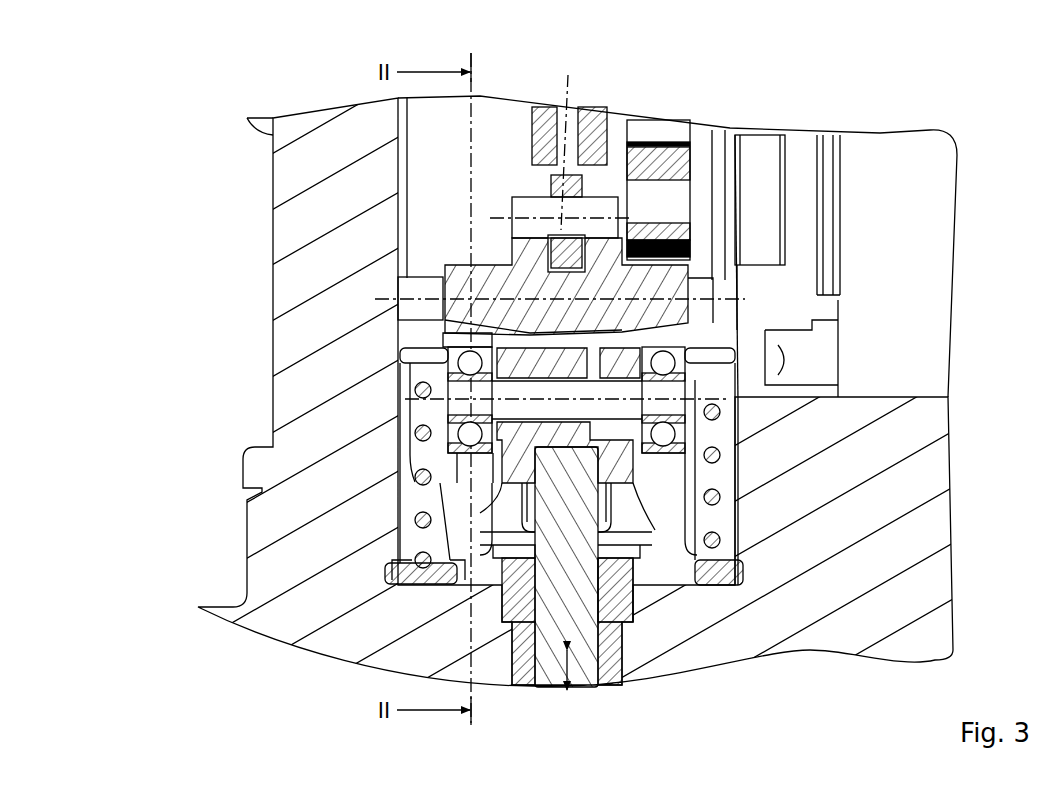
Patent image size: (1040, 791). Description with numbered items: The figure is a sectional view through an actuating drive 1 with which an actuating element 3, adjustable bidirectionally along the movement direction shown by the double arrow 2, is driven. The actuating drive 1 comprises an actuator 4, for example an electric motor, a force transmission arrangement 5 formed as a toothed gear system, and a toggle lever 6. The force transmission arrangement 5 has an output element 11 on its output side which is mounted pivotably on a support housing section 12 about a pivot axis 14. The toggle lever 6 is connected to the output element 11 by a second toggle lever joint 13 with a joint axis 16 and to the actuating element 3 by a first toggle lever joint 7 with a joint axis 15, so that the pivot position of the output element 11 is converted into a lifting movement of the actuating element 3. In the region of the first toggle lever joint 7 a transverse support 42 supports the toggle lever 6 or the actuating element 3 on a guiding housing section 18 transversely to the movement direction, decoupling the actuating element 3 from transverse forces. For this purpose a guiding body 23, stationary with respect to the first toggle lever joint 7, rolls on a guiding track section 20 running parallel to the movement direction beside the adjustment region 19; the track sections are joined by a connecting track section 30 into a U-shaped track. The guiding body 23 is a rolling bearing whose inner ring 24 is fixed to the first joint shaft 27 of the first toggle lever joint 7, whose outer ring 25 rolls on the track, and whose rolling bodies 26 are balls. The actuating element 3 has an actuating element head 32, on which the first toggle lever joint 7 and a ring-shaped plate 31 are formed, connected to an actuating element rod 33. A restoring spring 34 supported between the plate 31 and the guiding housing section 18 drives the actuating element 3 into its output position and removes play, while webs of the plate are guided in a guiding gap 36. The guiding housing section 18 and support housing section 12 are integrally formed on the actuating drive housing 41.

The actuating drive 1 is at (208, 105).
The double arrow 2 is at (567, 660).
The actuating element 3 is at (601, 598).
The actuator 4 is at (920, 228).
The force transmission arrangement 5 is at (658, 105).
The toggle lever 6 is at (590, 210).
The first toggle lever joint 7 is at (530, 206).
The output element 11 is at (462, 300).
The support housing section 12 is at (290, 226).
The second toggle lever joint 13 is at (520, 207).
The pivot axis 14 is at (380, 297).
The joint axis 15 is at (770, 380).
The joint axis 16 is at (565, 143).
The guiding housing section 18 is at (730, 520).
The adjustment region 19 is at (400, 472).
The guiding track section 20 is at (415, 445).
The guiding body 23 is at (440, 370).
The inner ring 24 is at (437, 372).
The outer ring 25 is at (440, 330).
The rolling bodies 26 is at (455, 336).
The first joint shaft 27 is at (622, 290).
The connecting track section 30 is at (662, 518).
The plate 31 is at (738, 330).
The actuating element head 32 is at (735, 300).
The actuating element rod 33 is at (440, 600).
The restoring spring 34 is at (405, 508).
The guiding gap 36 is at (450, 543).
The actuating drive housing 41 is at (268, 183).
The transverse support 42 is at (413, 412).